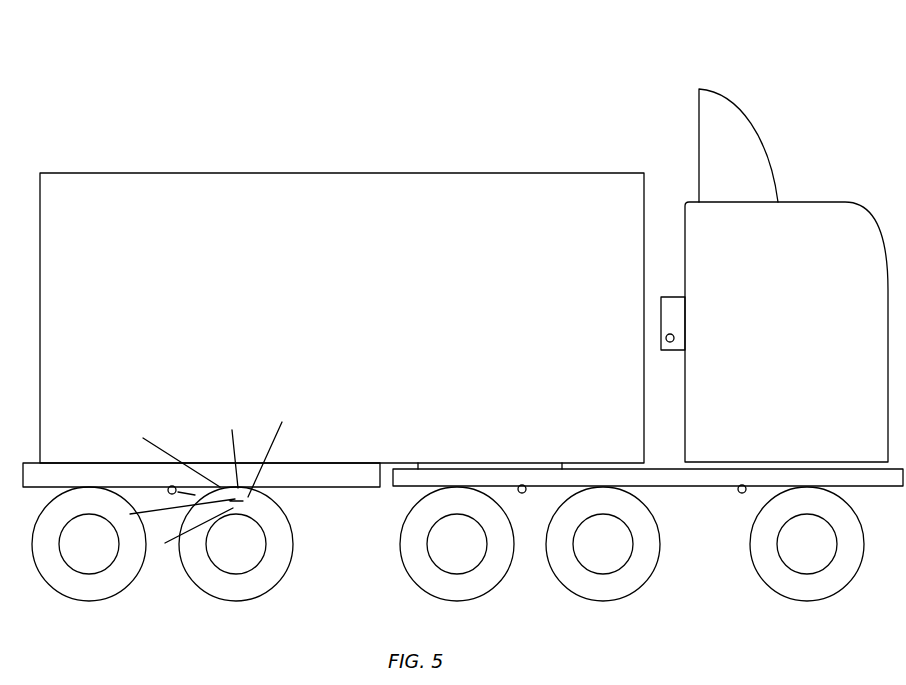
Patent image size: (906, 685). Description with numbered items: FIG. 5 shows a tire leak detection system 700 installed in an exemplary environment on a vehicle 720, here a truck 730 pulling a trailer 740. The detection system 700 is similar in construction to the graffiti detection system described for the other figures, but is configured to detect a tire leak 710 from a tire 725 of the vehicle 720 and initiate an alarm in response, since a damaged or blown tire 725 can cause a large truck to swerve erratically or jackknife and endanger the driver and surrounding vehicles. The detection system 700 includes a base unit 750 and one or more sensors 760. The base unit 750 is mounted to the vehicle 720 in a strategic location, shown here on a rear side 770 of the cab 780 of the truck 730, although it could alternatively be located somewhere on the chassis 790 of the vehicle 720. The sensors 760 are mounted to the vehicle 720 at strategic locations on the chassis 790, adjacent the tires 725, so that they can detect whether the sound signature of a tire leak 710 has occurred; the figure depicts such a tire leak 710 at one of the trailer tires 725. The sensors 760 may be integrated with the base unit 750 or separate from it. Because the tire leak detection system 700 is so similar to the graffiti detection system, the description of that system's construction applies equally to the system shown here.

The detection system 700 is at (605, 292).
The tire leak 710 is at (262, 501).
The vehicle 720 is at (786, 98).
The tire 725 is at (290, 562).
The truck 730 is at (820, 198).
The trailer 740 is at (40, 173).
The base unit 750 is at (661, 320).
The sensors 760 is at (666, 338).
The rear side 770 is at (685, 250).
The cab 780 is at (668, 200).
The chassis 790 is at (23, 472).